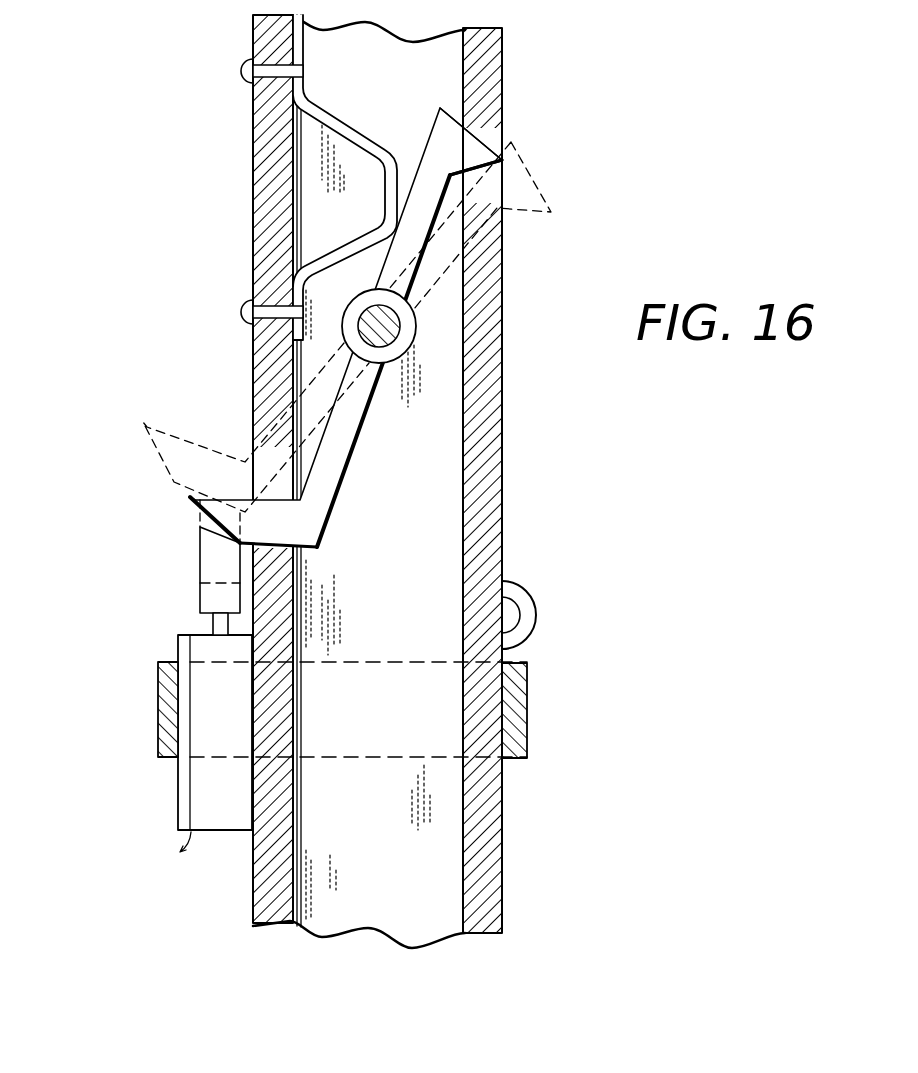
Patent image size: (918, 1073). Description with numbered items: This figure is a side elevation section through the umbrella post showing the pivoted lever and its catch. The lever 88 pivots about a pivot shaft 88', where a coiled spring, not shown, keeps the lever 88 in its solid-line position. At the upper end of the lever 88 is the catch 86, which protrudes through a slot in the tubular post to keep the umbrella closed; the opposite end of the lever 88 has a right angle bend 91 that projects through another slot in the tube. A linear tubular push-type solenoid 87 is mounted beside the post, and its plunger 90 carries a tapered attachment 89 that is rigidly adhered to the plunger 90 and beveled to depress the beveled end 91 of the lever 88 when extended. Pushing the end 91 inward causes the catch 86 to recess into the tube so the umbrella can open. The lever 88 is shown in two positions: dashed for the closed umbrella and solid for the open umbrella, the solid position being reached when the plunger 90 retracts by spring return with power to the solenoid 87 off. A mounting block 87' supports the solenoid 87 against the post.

The catch 86 is at (492, 133).
The linear solenoid 87 is at (169, 743).
The mounting block 87' is at (124, 709).
The pivoted lever 88 is at (346, 327).
The pivot shaft 88' is at (466, 346).
The tapered attachment 89 is at (200, 545).
The solenoid plunger 90 is at (213, 627).
The right angle bend 91 is at (196, 452).